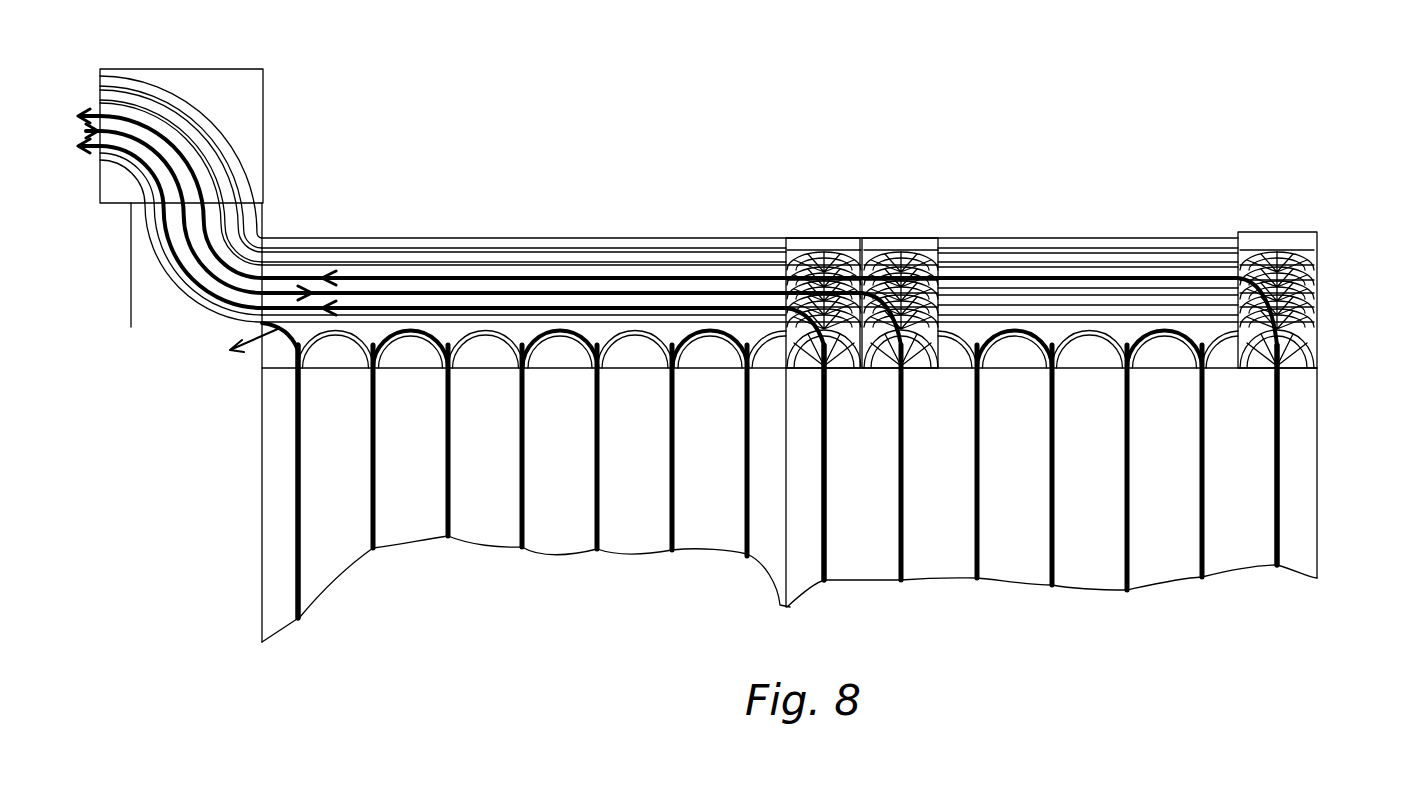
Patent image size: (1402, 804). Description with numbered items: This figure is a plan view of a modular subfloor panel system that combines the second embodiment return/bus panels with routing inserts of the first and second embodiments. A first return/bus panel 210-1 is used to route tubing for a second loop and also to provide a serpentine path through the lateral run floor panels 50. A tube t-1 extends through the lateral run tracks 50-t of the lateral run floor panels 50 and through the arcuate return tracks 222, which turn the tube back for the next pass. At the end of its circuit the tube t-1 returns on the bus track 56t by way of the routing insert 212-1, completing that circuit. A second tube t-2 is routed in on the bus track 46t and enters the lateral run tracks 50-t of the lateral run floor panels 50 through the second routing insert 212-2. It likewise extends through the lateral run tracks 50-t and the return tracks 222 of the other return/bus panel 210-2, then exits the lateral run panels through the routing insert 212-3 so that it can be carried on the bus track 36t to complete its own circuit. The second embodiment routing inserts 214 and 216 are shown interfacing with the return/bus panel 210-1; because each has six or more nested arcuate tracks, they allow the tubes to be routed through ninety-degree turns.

The second embodiment routing insert 216 is at (214, 68).
The second embodiment routing insert 214 is at (148, 323).
The first second embodiment return/bus panel 210-1 is at (604, 238).
The second embodiment return/bus panel 210-2 is at (1055, 240).
The first embodiment routing insert 212-1 is at (866, 195).
The first embodiment routing insert 212-2 is at (946, 195).
The first embodiment routing insert 212-3 is at (1320, 342).
The bus track 36t is at (342, 280).
The bus track 56t is at (368, 305).
The bus track 46t is at (646, 292).
The tube t-1 is at (414, 292).
The second tube t-2 is at (494, 290).
The return tracks 222 is at (412, 331).
The lateral run floor panels 50 is at (423, 527).
The lateral run tracks 50-t is at (301, 548).